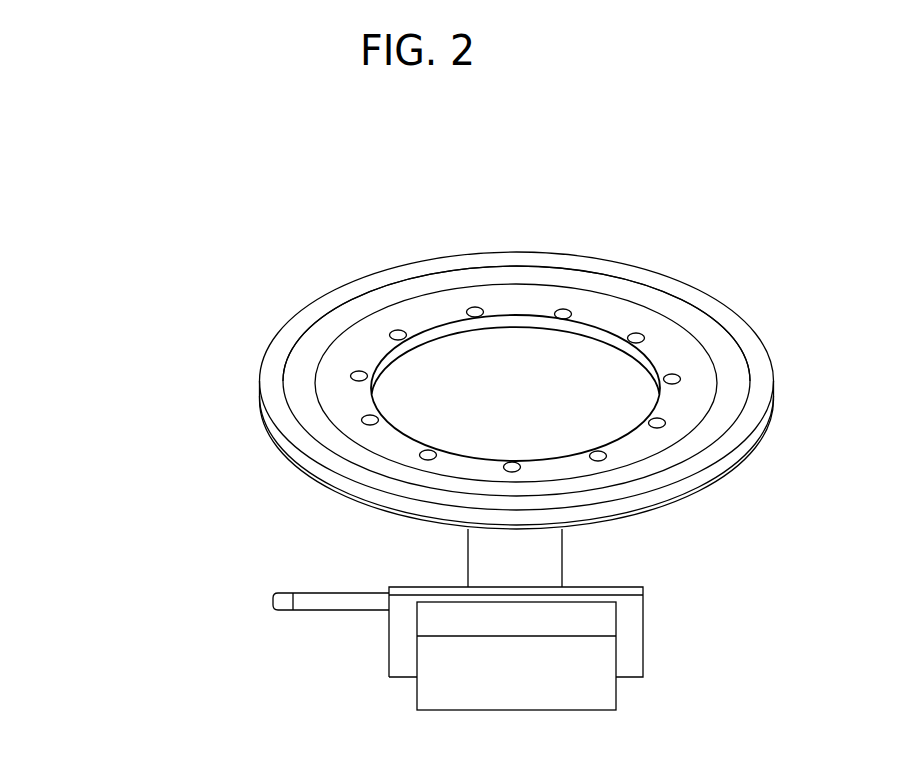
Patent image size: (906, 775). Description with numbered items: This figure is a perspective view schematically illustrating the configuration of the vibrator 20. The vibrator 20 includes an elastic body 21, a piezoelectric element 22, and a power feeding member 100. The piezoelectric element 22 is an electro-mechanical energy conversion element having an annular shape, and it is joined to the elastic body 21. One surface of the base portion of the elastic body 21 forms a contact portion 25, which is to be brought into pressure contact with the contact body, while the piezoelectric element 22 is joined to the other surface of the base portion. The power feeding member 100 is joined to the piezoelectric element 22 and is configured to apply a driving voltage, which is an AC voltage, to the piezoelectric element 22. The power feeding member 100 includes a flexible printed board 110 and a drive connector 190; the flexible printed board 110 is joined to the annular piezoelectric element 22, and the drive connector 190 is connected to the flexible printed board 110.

The vibrator 20 is at (97, 362).
The elastic body 21 is at (273, 398).
The piezoelectric element 22 is at (295, 468).
The contact portion 25 is at (305, 323).
The power feeding member 100 is at (167, 537).
The flexible printed board 110 is at (495, 558).
The drive connector 190 is at (447, 692).